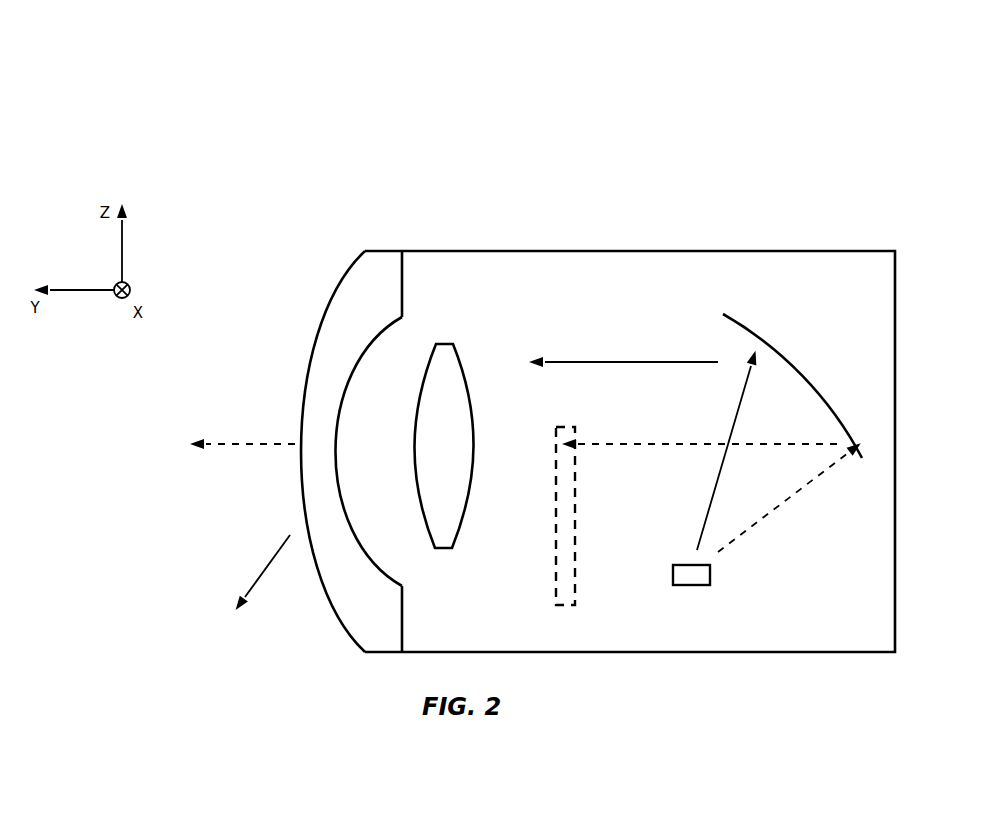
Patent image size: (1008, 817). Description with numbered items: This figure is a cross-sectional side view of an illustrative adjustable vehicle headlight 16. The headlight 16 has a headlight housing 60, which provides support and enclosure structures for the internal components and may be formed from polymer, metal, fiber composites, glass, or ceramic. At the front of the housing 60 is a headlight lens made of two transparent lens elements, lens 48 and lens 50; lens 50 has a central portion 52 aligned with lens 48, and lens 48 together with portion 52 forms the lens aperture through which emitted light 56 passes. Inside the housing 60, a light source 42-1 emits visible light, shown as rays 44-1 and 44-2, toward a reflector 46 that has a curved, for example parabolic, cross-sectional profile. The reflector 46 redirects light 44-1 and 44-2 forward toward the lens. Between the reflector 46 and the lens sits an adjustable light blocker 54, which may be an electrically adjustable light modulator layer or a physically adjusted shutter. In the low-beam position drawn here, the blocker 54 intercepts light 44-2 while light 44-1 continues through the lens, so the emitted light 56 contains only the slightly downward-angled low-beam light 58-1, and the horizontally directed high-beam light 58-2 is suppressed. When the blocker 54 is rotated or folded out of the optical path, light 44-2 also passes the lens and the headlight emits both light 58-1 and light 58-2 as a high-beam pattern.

The headlight 16 is at (773, 90).
The headlight housing 60 is at (698, 250).
The lens 50 is at (384, 258).
The central portion 52 is at (362, 456).
The lens 48 is at (442, 548).
The reflector 46 is at (788, 361).
The light 44-1 is at (624, 361).
The light 44-2 is at (677, 443).
The adjustable light blocker 54 is at (563, 593).
The light source 42-1 is at (693, 586).
The light 58-1 is at (272, 558).
The light 58-2 is at (265, 443).
The light 56 is at (184, 523).